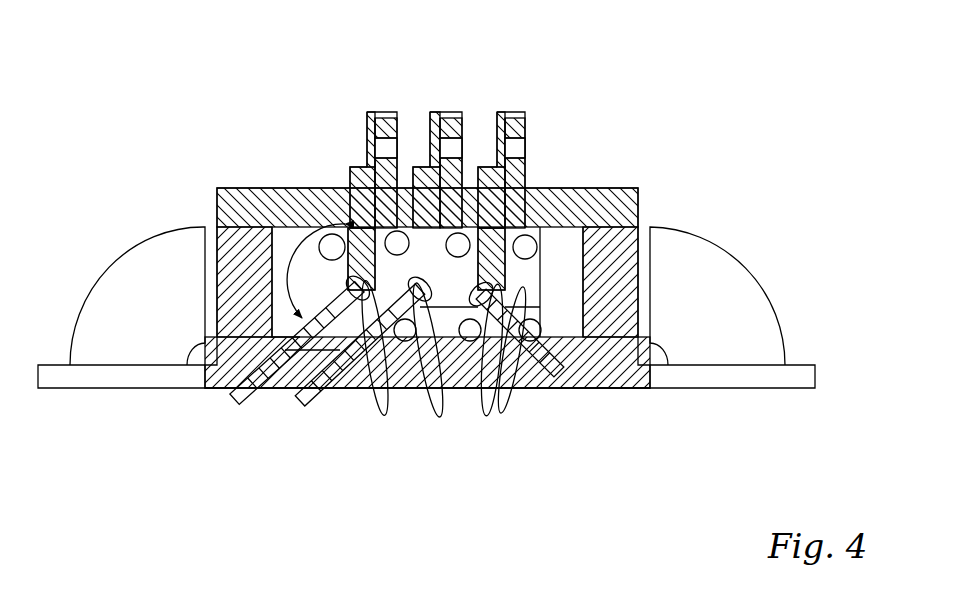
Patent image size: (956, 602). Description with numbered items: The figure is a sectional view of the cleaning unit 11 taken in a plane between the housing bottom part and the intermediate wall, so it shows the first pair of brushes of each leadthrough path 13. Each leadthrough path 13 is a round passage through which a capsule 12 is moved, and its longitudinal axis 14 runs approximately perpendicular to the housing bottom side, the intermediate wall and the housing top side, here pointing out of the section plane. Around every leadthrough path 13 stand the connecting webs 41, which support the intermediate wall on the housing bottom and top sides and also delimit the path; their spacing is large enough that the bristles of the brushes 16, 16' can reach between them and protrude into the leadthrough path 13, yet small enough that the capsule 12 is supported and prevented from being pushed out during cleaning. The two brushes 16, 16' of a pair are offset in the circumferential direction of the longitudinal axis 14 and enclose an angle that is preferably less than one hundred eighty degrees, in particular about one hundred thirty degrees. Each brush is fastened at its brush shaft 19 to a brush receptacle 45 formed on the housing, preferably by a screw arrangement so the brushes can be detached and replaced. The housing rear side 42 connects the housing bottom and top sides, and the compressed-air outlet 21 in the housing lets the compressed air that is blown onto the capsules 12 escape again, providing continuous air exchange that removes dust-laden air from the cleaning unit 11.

The cleaning unit 11 is at (680, 166).
The capsule 12 is at (318, 240).
The leadthrough path 13 is at (385, 233).
The longitudinal axis 14 is at (328, 380).
The brush 16 is at (413, 177).
The brush 16' is at (299, 384).
The brush shaft 19 is at (367, 113).
The compressed-air outlet 21 is at (127, 390).
The connecting webs 41 is at (418, 415).
The housing rear side 42 is at (636, 390).
The brush receptacles 45 is at (384, 113).